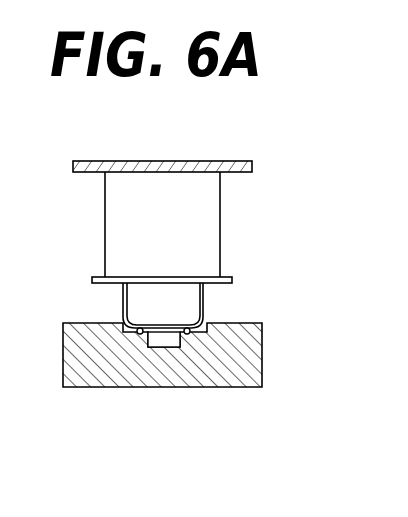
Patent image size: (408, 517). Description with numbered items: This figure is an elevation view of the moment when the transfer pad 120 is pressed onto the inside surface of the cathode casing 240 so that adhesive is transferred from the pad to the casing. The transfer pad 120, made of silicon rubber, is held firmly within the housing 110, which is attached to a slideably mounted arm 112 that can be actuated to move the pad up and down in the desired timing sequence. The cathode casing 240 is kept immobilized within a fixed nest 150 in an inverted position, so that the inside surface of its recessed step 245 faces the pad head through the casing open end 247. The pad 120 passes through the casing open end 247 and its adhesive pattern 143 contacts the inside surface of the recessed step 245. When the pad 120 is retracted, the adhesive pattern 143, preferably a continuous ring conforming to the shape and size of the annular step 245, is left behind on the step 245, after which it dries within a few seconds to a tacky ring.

The arm 112 is at (218, 160).
The housing 110 is at (222, 232).
The transfer pad 120 is at (203, 299).
The cathode casing 240 is at (205, 313).
The casing open end 247 is at (124, 305).
The fixed nest 150 is at (262, 367).
The adhesive pattern 143 is at (136, 331).
The recessed step 245 is at (145, 334).